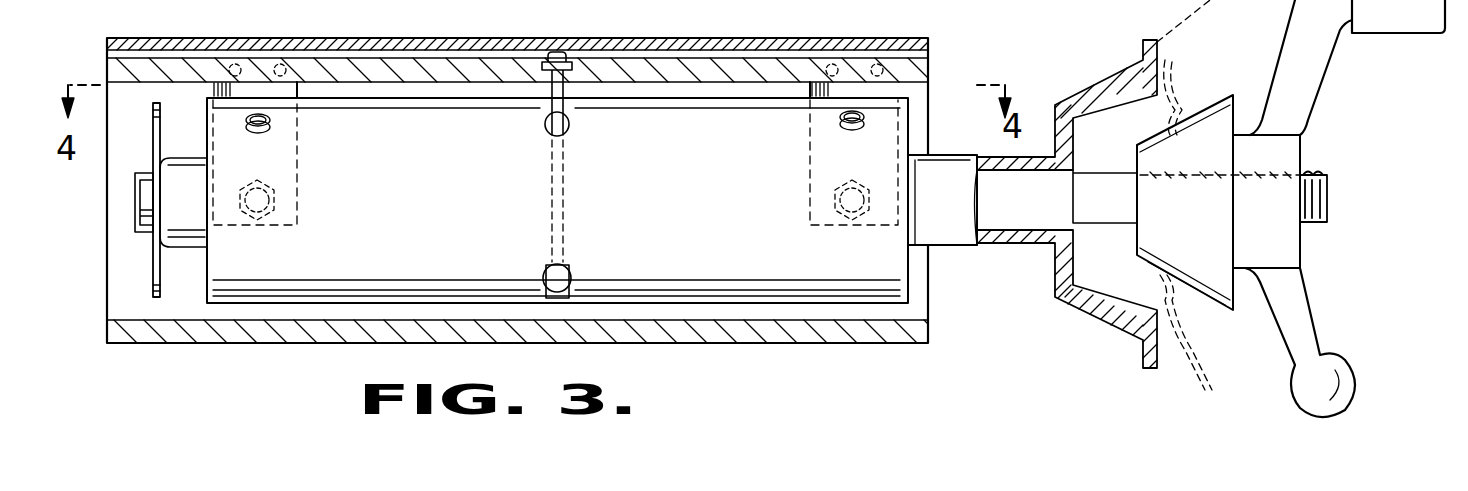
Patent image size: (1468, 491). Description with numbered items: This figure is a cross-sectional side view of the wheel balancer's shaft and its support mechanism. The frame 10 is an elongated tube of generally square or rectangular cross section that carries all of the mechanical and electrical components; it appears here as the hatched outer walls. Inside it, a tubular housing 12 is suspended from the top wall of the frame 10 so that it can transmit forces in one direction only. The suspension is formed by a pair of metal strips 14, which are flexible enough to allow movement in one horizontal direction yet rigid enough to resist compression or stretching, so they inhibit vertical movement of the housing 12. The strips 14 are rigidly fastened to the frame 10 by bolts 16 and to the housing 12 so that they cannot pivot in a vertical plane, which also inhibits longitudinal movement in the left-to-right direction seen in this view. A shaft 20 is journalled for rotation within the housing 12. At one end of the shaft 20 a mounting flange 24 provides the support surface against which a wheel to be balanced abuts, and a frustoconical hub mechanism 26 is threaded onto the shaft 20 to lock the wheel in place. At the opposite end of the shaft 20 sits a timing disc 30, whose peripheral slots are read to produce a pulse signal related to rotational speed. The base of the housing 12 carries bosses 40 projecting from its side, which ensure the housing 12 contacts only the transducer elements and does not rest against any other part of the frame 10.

The frame 10 is at (712, 335).
The tubular housing 12 is at (637, 296).
The metal strips 14 is at (817, 97).
The bolts 16 is at (878, 62).
The shaft 20 is at (945, 246).
The mounting flange 24 is at (1112, 93).
The frustoconical hub mechanism 26 is at (1230, 95).
The timing disc 30 is at (152, 283).
The bosses 40 is at (835, 200).